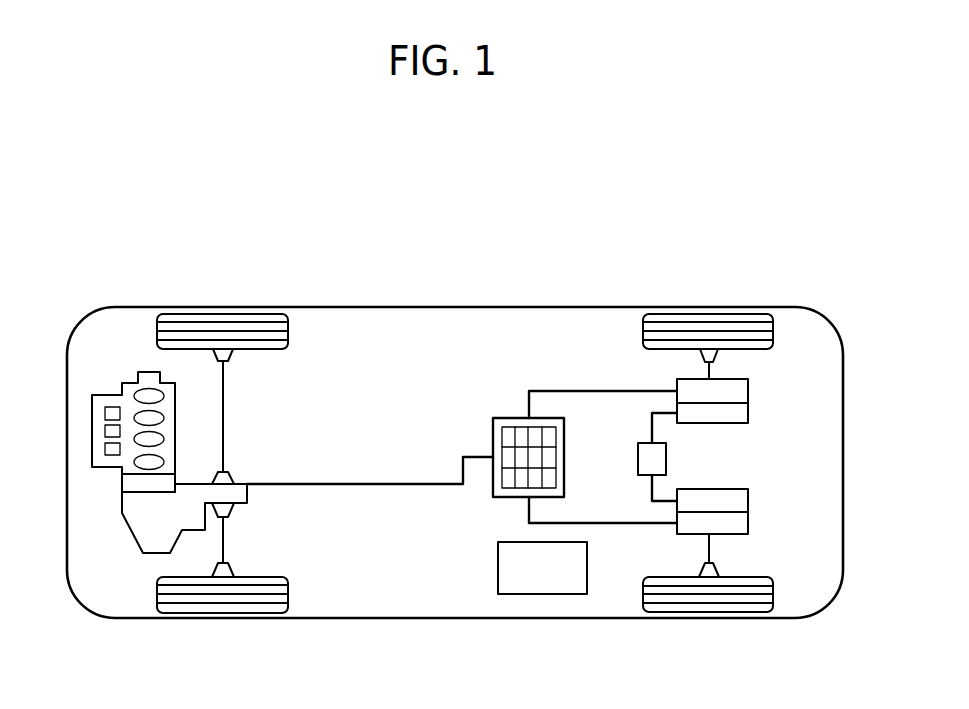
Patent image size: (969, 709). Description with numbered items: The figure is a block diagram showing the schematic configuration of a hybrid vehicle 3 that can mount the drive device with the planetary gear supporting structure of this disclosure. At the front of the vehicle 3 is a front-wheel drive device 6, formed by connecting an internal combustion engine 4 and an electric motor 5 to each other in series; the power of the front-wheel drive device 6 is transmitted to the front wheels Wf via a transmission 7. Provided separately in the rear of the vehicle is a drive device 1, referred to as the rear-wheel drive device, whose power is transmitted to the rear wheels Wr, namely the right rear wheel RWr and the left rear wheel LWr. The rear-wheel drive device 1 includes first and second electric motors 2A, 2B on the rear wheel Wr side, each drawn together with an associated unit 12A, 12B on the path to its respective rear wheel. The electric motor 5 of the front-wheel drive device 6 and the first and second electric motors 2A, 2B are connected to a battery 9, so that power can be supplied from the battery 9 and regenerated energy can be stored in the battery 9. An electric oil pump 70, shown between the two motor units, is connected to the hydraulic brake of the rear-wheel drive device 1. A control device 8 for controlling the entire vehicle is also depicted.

The drive device 1 is at (700, 448).
The first electric motor 2A is at (738, 523).
The second electric motor 2B is at (738, 392).
The vehicle 3 is at (554, 207).
The internal combustion engine 4 is at (92, 420).
The electric motor 5 is at (122, 480).
The front-wheel drive device 6 is at (92, 435).
The transmission 7 is at (128, 524).
The control device 8 is at (531, 594).
The battery 9 is at (510, 418).
The first speed reducer 12A is at (738, 497).
The second speed reducer 12B is at (738, 415).
The electric oil pump 70 is at (657, 457).
The front wheels Wf is at (288, 333).
The rear wheels Wr is at (770, 511).
The left rear wheel LWr is at (729, 601).
The right rear wheel RWr is at (773, 330).